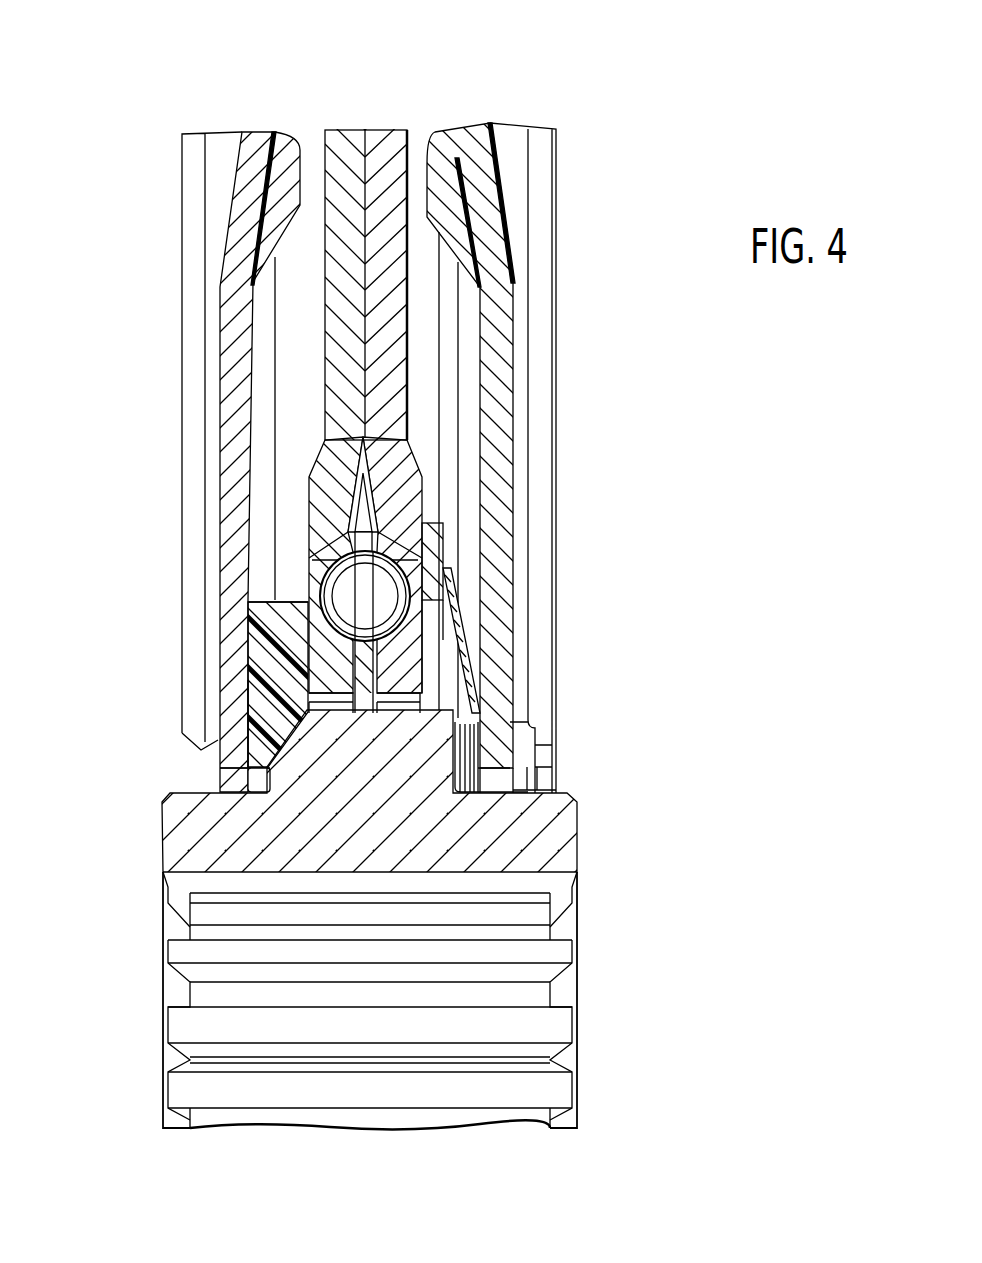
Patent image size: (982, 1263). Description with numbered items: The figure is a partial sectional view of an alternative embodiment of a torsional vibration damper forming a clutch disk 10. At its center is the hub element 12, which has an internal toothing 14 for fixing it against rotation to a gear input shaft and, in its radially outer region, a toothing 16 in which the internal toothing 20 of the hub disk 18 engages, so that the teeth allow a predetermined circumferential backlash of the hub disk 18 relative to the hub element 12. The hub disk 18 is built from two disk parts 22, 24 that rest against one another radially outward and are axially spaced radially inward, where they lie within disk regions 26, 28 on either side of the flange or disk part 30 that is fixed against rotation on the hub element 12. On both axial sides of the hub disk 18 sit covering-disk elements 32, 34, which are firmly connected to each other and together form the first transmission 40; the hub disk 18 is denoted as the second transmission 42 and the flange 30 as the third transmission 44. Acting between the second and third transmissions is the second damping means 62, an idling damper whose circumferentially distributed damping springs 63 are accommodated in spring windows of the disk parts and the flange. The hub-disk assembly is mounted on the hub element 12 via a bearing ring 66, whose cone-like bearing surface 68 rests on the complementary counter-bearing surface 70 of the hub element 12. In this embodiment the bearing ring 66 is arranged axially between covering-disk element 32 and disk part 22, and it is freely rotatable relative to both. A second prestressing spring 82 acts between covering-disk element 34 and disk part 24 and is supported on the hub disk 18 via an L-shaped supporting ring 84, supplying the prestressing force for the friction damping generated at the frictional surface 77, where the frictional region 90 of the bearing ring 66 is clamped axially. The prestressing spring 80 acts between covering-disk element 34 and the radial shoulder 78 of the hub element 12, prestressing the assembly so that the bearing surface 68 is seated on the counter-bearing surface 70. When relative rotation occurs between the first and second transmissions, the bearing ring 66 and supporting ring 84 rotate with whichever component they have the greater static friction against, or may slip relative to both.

The clutch disk 10 is at (148, 238).
The hub element 12 is at (165, 1033).
The internal toothing 14 is at (556, 994).
The toothing 16 is at (340, 750).
The hub disk 18 is at (404, 255).
The internal toothing 20 is at (540, 745).
The disk part 22 is at (340, 138).
The disk part 24 is at (408, 162).
The disk region 26 is at (310, 487).
The disk region 28 is at (420, 492).
The flange or disk part 30 is at (380, 690).
The covering-disk element 32 is at (228, 292).
The covering-disk element 34 is at (505, 328).
The first transmission 40 is at (585, 182).
The second transmission 42 is at (300, 85).
The third transmission 44 is at (338, 527).
The second damping means 62 is at (507, 596).
The damping springs 63 is at (405, 614).
The bearing ring 66 is at (265, 652).
The bearing surface 68 is at (248, 686).
The counter-bearing surface 70 is at (262, 780).
The frictional surface 77 is at (242, 713).
The radial shoulder 78 is at (456, 758).
The prestressing spring 80 is at (478, 752).
The second prestressing spring 82 is at (465, 657).
The supporting ring 84 is at (445, 545).
The frictional region 90 is at (250, 640).